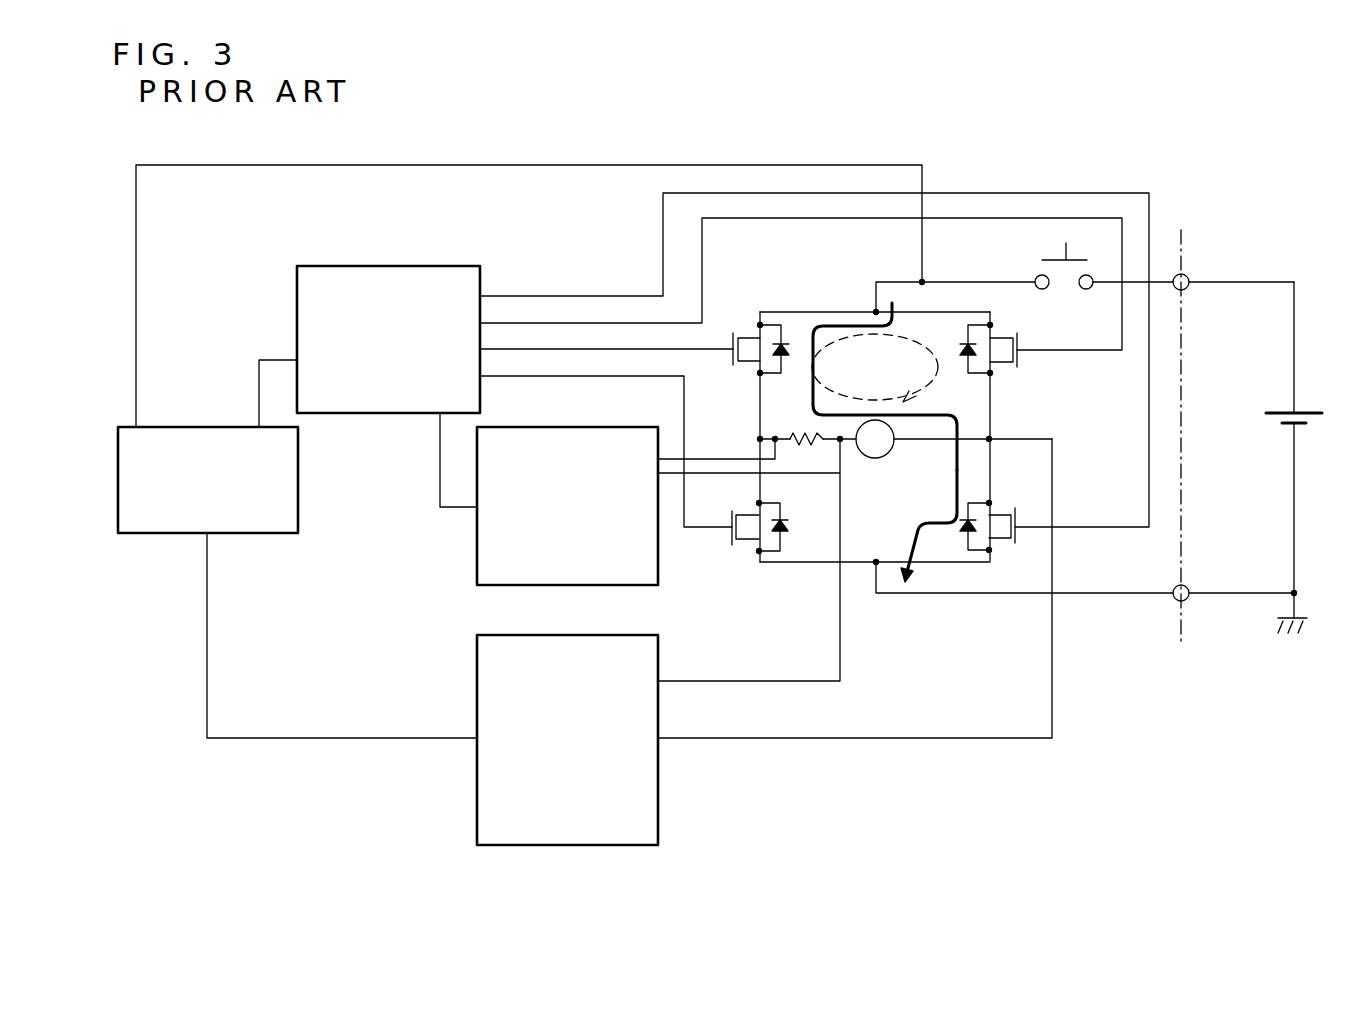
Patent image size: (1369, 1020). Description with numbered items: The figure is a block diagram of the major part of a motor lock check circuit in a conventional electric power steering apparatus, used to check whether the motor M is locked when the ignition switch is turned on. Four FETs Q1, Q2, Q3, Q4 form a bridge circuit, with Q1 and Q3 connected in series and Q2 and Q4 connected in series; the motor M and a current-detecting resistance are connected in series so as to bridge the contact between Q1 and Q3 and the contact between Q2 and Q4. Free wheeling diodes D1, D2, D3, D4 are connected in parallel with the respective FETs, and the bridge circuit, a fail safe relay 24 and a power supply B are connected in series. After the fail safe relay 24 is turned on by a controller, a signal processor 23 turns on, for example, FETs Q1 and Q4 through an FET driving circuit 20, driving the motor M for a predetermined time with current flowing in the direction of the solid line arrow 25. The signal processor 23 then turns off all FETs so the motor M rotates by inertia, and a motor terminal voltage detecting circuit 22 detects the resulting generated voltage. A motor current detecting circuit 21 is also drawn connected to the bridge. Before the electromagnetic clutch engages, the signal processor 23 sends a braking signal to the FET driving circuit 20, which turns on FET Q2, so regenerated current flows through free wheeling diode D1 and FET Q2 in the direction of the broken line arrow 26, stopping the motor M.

The FET driving circuit 20 is at (440, 266).
The motor current detecting circuit 21 is at (660, 586).
The motor terminal voltage detecting circuit 22 is at (658, 781).
The signal processor 23 is at (298, 534).
The fail safe relay 24 is at (1042, 255).
The solid line arrow 25 is at (935, 523).
The broken line arrow 26 is at (897, 337).
The FET Q1 is at (732, 342).
The FET Q2 is at (1000, 333).
The FET Q3 is at (730, 537).
The FET Q4 is at (1035, 505).
The free wheeling diode D1 is at (788, 340).
The free wheeling diode D2 is at (963, 364).
The free wheeling diode D3 is at (787, 530).
The free wheeling diode D4 is at (957, 525).
The power supply B is at (1318, 402).
The motor M is at (875, 439).